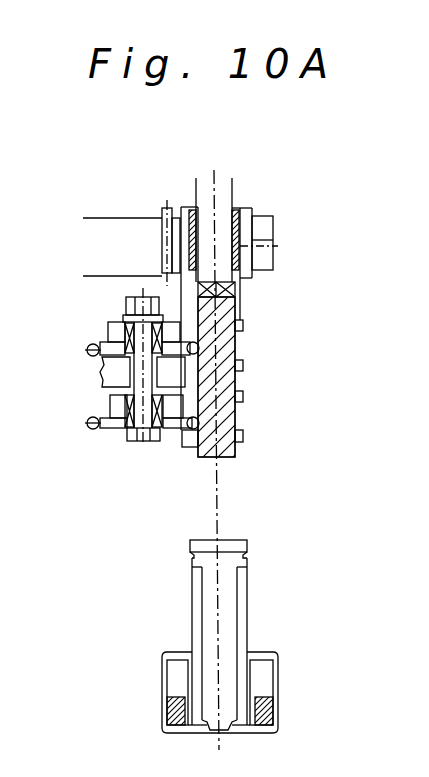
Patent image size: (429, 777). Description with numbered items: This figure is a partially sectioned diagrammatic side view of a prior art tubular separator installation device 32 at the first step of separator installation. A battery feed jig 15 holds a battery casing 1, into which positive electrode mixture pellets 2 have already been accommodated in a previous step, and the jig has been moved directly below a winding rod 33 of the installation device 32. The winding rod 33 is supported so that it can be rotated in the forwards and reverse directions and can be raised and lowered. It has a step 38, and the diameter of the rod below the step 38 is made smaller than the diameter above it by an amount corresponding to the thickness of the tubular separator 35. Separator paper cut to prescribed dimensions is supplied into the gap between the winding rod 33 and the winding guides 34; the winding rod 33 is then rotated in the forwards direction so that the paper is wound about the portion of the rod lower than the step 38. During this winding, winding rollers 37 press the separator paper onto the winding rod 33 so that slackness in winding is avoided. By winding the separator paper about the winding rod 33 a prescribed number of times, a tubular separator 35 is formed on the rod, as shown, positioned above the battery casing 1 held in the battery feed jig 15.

The battery casing 1 is at (247, 542).
The positive electrode mixture pellets 2 is at (240, 597).
The battery feed jig 15 is at (278, 695).
The tubular separator installation device 32 is at (287, 277).
The winding rod 33 is at (227, 203).
The winding guides 34 is at (243, 396).
The tubular separator 35 is at (233, 352).
The winding rollers 37 is at (170, 440).
The step 38 is at (230, 302).